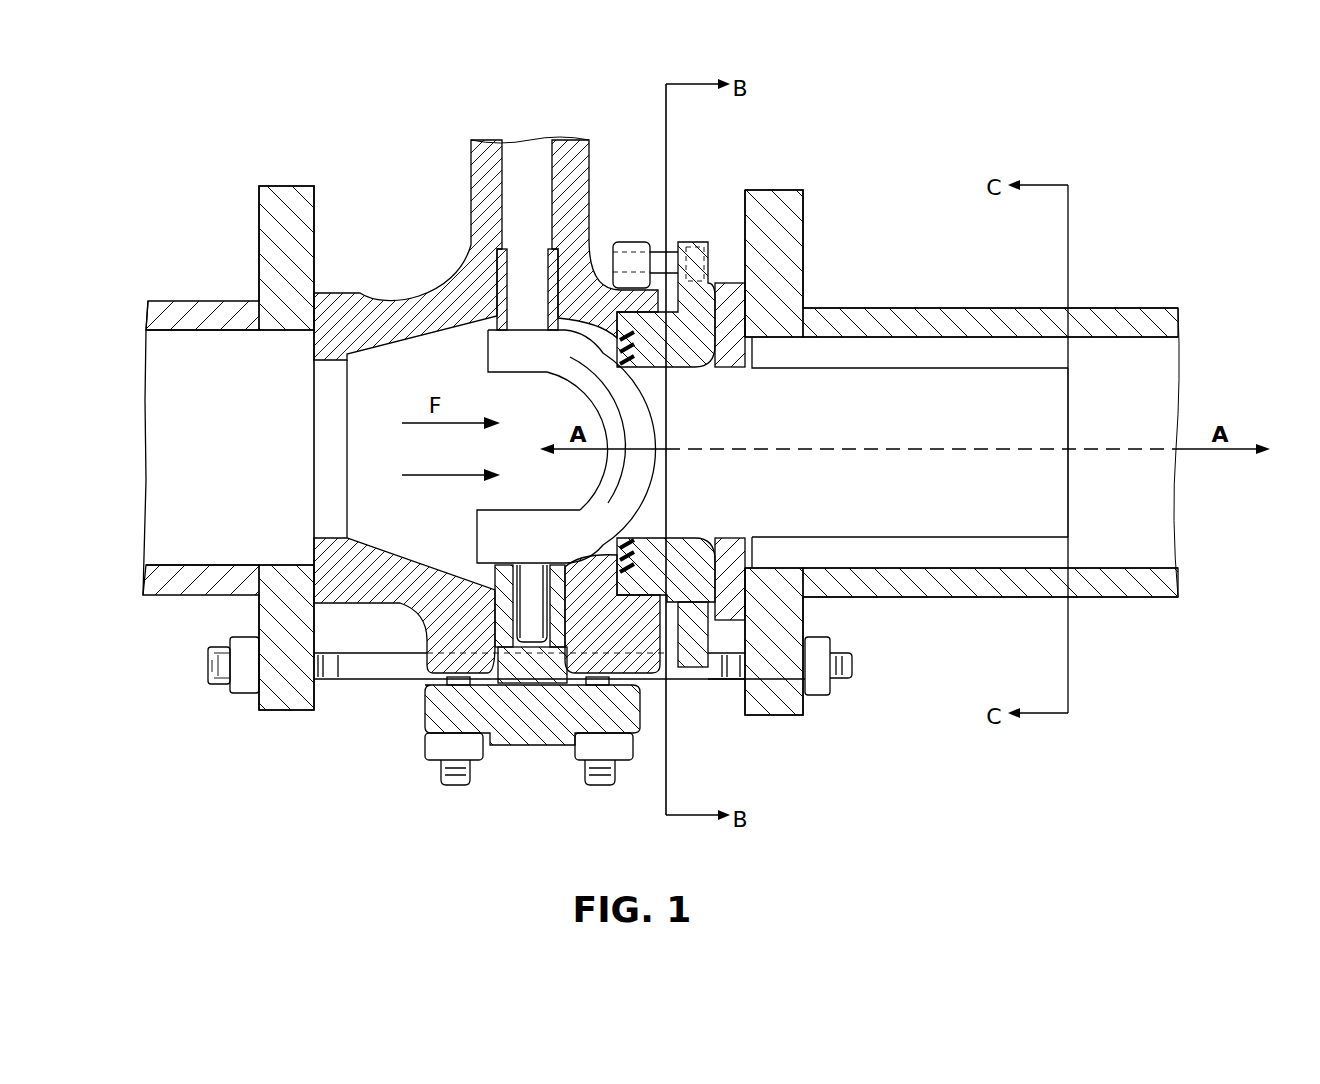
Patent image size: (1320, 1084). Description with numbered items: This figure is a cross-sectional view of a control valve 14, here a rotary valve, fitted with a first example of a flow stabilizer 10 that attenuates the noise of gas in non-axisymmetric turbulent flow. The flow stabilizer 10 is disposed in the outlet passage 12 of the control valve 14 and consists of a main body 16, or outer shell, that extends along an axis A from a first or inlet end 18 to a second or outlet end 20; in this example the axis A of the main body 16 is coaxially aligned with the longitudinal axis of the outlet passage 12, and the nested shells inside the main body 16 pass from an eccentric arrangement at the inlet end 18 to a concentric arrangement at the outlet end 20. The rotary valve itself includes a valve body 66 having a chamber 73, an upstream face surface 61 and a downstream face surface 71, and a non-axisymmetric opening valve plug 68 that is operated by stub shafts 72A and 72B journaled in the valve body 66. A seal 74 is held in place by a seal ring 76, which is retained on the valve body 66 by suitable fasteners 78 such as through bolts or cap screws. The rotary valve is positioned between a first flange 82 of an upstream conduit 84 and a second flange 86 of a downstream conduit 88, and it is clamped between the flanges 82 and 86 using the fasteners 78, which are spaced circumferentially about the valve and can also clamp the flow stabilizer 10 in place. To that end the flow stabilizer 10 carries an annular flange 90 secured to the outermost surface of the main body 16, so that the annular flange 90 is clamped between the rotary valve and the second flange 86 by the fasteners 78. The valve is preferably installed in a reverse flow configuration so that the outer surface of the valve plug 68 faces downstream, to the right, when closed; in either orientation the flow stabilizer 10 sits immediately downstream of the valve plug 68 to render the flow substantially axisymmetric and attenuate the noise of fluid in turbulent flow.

The flow stabilizer 10 is at (922, 335).
The outlet passage 12 is at (1148, 360).
The control valve 14 is at (408, 240).
The main body 16 is at (1019, 540).
The inlet end 18 is at (657, 395).
The outlet end 20 is at (1072, 424).
The upstream face surface 61 is at (305, 584).
The valve body 66 is at (487, 206).
The valve plug 68 is at (550, 360).
The downstream face surface 71 is at (662, 622).
The stub shaft 72A is at (528, 150).
The stub shaft 72B is at (534, 628).
The chamber 73 is at (375, 370).
The seal 74 is at (627, 553).
The seal ring 76 is at (693, 650).
The fasteners 78 is at (716, 684).
The first flange 82 is at (293, 196).
The conduit 84 is at (183, 305).
The second flange 86 is at (795, 197).
The conduit 88 is at (1100, 318).
The annular flange 90 is at (727, 290).